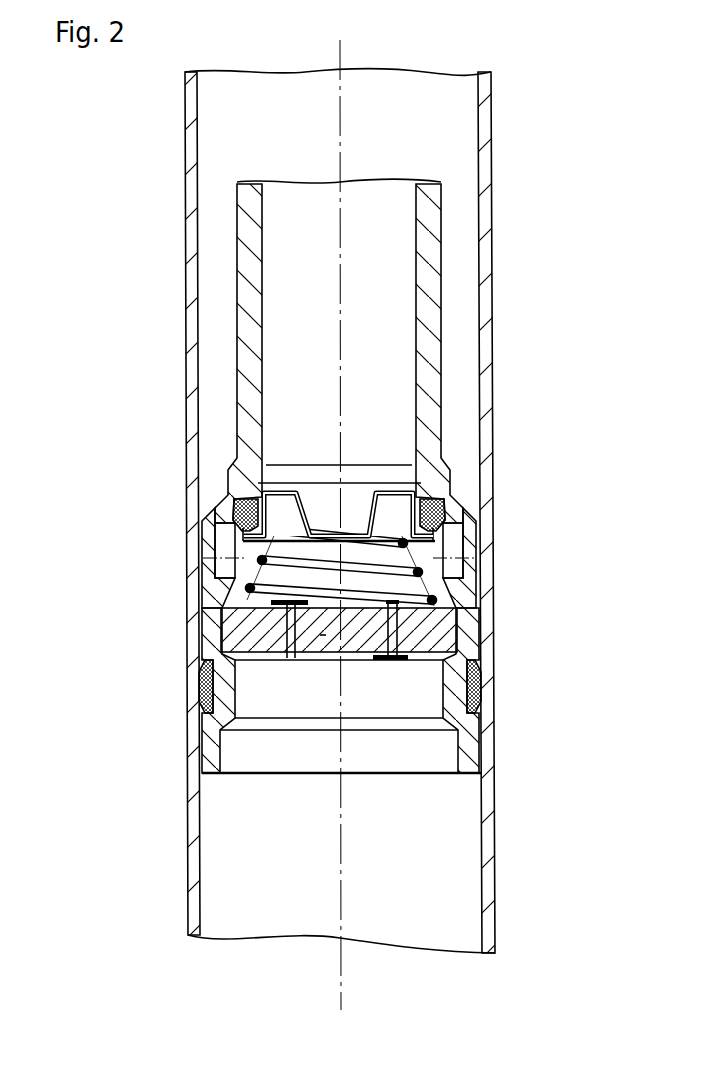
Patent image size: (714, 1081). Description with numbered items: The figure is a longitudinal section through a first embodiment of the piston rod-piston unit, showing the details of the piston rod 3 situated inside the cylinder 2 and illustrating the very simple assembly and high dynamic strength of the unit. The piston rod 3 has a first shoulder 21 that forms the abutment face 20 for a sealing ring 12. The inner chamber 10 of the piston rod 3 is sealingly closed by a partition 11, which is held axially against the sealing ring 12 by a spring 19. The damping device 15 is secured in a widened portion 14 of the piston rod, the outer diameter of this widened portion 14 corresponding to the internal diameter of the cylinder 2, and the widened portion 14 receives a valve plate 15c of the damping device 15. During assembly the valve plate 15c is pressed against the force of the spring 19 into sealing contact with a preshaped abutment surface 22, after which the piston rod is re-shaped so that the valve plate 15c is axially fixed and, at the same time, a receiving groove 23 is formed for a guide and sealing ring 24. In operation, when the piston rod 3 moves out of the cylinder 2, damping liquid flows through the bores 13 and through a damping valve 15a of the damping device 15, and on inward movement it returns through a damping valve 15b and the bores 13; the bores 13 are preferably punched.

The cylinder 2 is at (489, 264).
The piston rod 3 is at (420, 194).
The inner chamber 10 is at (300, 235).
The partition 11 is at (397, 491).
The sealing ring 12 is at (447, 508).
The bores 13 is at (455, 543).
The widened portion 14 is at (208, 623).
The damping device 15 is at (437, 628).
The damping valve 15a is at (399, 661).
The damping valve 15b is at (290, 658).
The valve plate 15c is at (323, 635).
The spring 19 is at (258, 561).
The abutment face 20 is at (232, 512).
The first shoulder 21 is at (220, 520).
The abutment surface 22 is at (458, 591).
The receiving groove 23 is at (479, 691).
The guide and sealing ring 24 is at (199, 693).